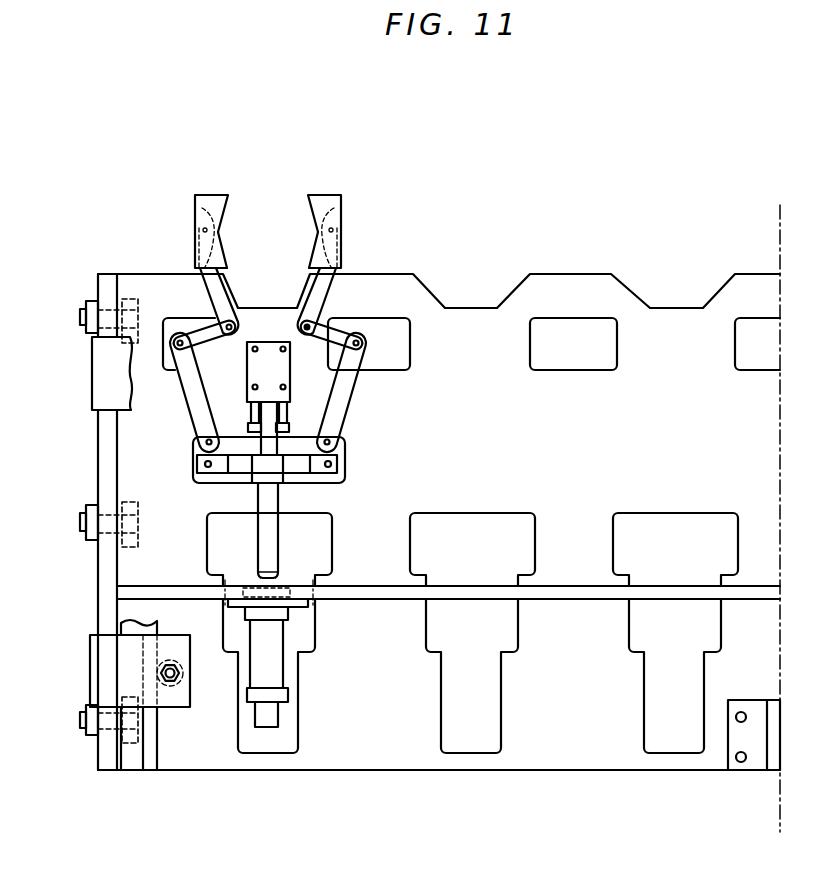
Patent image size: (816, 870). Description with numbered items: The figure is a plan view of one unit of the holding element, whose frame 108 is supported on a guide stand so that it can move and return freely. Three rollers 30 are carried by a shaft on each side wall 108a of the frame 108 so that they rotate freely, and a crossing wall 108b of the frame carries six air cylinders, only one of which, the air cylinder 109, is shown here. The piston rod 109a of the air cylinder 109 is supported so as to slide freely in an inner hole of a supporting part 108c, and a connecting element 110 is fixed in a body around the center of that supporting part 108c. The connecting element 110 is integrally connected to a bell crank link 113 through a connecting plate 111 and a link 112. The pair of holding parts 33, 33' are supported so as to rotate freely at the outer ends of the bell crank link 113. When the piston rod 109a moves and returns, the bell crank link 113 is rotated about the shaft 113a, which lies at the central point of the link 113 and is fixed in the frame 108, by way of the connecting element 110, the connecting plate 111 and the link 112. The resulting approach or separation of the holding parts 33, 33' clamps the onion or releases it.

The holding part 33 is at (188, 222).
The holding part 33' is at (304, 222).
The roller 30 is at (134, 298).
The frame 108 is at (592, 441).
The side wall 108a is at (105, 452).
The crossing wall 108b is at (395, 594).
The supporting part 108c is at (280, 373).
The air cylinder 109 is at (273, 667).
The piston rod 109a is at (272, 504).
The connecting element 110 is at (262, 473).
The connecting plate 111 is at (193, 478).
The link 112 is at (192, 393).
The bell crank link 113 is at (213, 291).
The shaft 113a is at (303, 323).